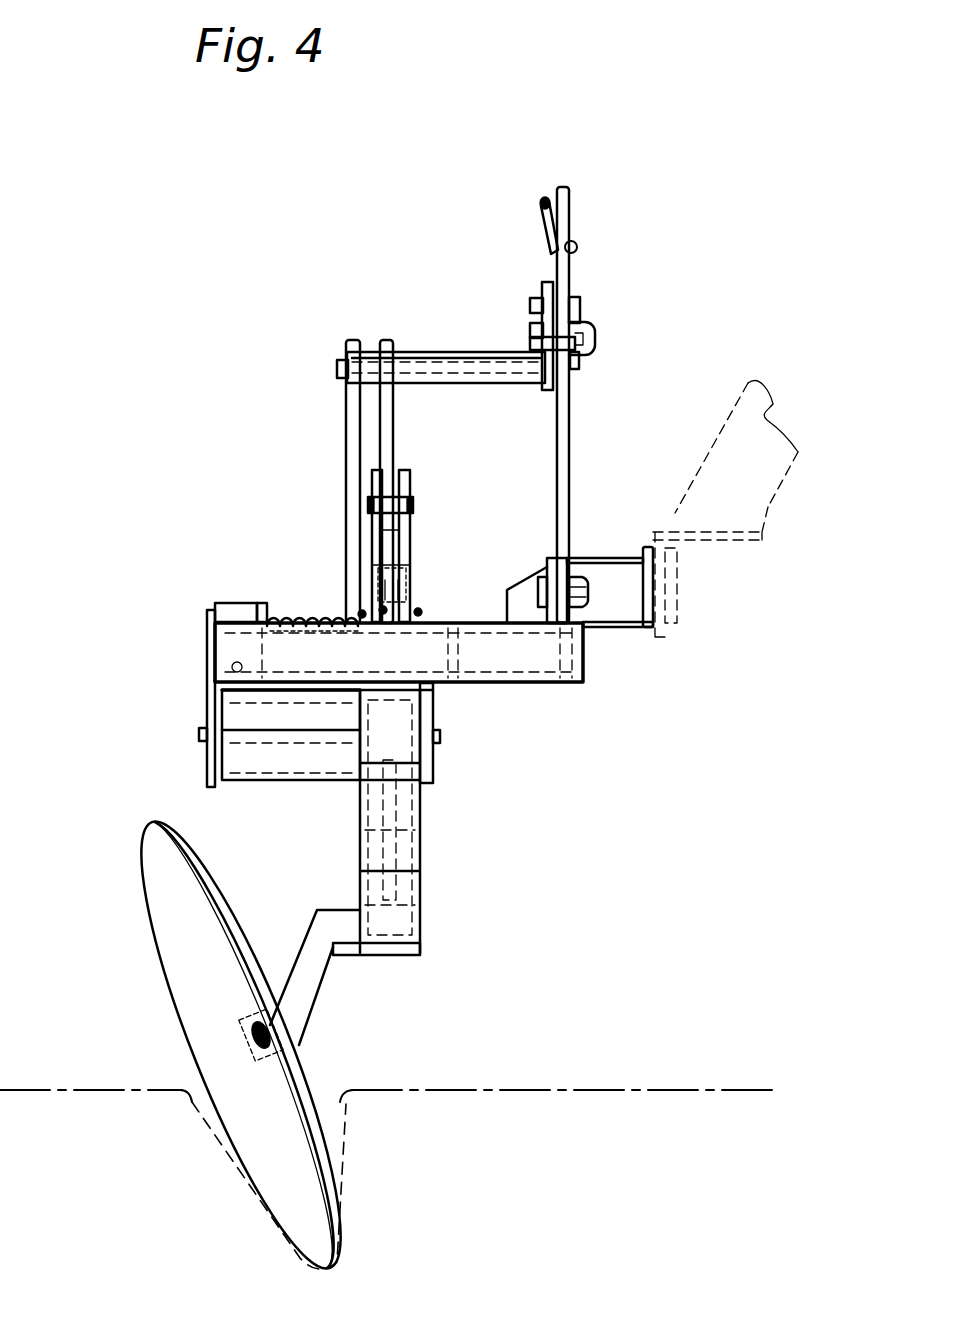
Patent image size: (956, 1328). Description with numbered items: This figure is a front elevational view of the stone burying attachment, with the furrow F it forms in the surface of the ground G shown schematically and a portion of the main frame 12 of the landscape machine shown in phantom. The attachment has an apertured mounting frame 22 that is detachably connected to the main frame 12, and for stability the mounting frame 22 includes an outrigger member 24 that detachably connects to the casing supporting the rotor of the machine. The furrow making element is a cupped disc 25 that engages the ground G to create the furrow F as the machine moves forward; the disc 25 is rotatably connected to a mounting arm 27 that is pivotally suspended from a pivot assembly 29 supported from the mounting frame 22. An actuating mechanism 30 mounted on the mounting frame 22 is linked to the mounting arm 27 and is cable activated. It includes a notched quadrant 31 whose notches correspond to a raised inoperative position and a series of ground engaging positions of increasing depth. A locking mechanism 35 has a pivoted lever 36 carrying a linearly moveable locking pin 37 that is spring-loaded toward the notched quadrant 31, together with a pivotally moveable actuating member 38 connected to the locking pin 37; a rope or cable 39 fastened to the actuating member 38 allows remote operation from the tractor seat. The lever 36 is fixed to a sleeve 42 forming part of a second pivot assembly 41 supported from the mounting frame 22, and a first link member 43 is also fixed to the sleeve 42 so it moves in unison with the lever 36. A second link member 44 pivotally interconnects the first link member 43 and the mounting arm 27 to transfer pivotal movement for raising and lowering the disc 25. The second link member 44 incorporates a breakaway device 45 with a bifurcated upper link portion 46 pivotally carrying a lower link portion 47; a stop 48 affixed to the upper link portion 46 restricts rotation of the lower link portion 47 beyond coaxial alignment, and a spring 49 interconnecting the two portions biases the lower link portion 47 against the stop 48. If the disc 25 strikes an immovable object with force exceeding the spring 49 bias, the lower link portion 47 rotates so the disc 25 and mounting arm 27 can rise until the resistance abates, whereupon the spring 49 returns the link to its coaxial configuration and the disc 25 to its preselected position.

The main frame 12 is at (747, 502).
The mounting frame 22 is at (596, 617).
The outrigger member 24 is at (348, 694).
The disc 25 is at (214, 1044).
The mounting arm 27 is at (355, 864).
The pivot assembly 29 is at (236, 738).
The actuating mechanism 30 is at (528, 369).
The notched quadrant 31 is at (606, 405).
The locking mechanism 35 is at (524, 317).
The pivoted lever 36 is at (493, 329).
The locking pin 37 is at (613, 340).
The actuating member 38 is at (502, 238).
The cable 39 is at (492, 215).
The second pivot assembly 41 is at (413, 326).
The sleeve 42 is at (441, 403).
The first link member 43 is at (321, 481).
The second link member 44 is at (443, 500).
The breakaway device 45 is at (319, 485).
The upper link portion 46 is at (459, 546).
The lower link portion 47 is at (418, 593).
The stop 48 is at (345, 546).
The spring 49 is at (254, 600).
The ground G is at (387, 1064).
The furrow F is at (256, 1185).